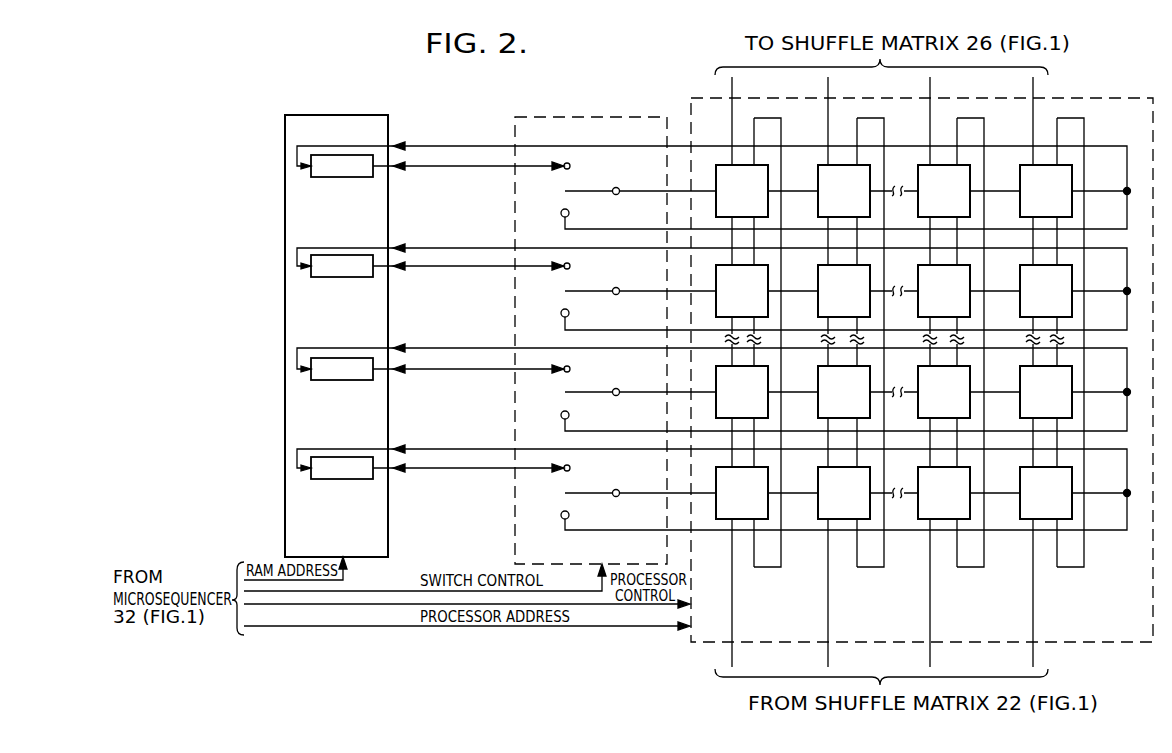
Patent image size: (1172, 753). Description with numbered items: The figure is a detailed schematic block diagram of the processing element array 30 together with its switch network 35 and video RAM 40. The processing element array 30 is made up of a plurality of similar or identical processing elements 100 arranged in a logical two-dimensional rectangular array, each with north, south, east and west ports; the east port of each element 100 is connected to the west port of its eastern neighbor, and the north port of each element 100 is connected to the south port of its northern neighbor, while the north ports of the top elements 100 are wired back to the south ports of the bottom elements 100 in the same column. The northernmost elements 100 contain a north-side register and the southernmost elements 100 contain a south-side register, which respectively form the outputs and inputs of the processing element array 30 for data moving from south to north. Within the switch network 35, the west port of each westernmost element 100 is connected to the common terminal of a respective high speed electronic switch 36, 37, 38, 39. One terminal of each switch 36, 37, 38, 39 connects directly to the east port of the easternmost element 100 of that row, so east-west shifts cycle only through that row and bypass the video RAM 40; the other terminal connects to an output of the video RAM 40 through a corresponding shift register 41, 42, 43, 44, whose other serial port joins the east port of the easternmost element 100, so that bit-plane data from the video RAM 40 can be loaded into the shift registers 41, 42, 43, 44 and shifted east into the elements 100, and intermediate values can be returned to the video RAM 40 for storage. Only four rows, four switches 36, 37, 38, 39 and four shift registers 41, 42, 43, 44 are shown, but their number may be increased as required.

The processing element array 30 is at (1088, 98).
The switch network 35 is at (600, 117).
The switch 36 is at (615, 187).
The switch 37 is at (615, 287).
The switch 38 is at (615, 388).
The switch 39 is at (615, 489).
The video RAM 40 is at (350, 115).
The shift register 41 is at (343, 178).
The shift register 42 is at (343, 278).
The shift register 43 is at (343, 381).
The shift register 44 is at (343, 480).
The processing element 100 is at (722, 166).